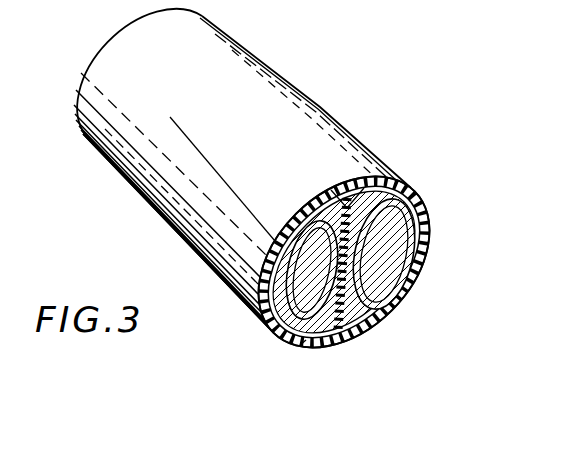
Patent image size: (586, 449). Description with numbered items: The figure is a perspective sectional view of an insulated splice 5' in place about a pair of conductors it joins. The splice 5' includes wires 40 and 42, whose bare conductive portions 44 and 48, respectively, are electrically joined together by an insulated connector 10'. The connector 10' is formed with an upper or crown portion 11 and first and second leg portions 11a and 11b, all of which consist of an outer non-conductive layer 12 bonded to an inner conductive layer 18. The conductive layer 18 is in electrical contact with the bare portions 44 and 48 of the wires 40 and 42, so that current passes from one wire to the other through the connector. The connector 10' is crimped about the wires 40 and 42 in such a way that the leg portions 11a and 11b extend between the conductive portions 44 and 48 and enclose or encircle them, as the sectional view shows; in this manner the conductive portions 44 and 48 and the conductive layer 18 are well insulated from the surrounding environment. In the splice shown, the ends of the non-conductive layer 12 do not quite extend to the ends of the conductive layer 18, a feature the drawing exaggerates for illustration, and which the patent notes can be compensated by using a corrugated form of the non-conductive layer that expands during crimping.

The insulated connector 10' is at (242, 170).
The insulated splice 5' is at (176, 231).
The outer non-conductive layer 12 is at (378, 178).
The upper or crown portion 11 is at (326, 192).
The first leg portion 11a is at (290, 338).
The second leg portion 11b is at (392, 317).
The conductive portion 44 is at (278, 303).
The conductive portion 48 is at (396, 200).
The wire 42 is at (448, 218).
The inner conductive layer 18 is at (310, 342).
The wire 40 is at (285, 360).